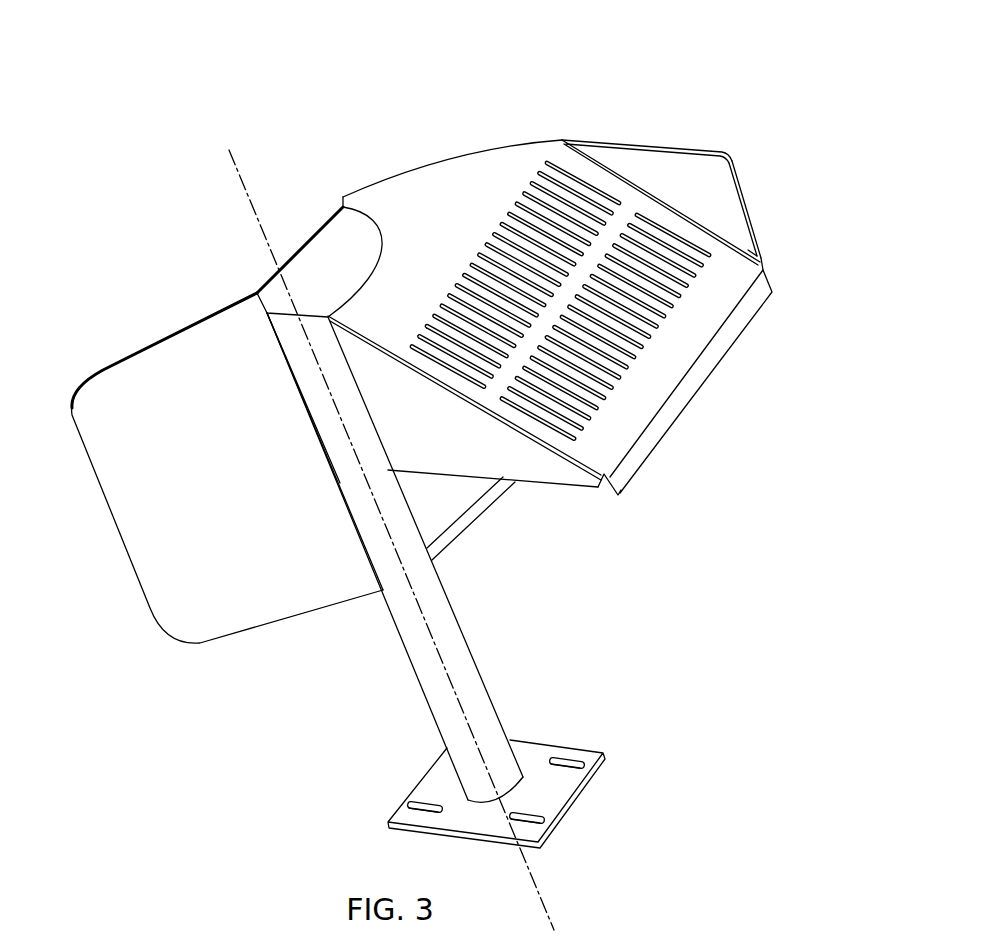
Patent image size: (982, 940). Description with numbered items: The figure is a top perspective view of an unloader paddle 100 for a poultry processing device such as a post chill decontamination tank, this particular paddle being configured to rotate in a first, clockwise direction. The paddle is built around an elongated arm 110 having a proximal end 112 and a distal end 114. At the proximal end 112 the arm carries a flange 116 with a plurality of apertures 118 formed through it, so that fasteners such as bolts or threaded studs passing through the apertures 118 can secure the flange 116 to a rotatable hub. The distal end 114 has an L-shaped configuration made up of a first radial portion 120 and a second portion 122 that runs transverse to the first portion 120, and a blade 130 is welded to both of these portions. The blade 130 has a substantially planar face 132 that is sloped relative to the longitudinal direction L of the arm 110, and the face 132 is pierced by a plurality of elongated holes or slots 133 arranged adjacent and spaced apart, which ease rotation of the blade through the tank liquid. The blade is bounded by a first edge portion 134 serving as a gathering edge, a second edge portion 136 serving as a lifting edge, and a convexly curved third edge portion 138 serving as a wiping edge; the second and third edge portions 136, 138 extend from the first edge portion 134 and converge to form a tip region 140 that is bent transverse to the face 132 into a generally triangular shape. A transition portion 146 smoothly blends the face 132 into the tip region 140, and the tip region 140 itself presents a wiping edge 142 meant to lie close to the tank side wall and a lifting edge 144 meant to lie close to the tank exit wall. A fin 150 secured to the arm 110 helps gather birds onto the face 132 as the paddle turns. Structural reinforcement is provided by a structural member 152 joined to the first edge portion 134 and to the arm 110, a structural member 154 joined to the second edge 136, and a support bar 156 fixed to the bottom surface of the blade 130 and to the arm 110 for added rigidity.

The unloader paddle 100 is at (500, 82).
The elongated arm 110 is at (470, 637).
The proximal end 112 is at (487, 708).
The distal end 114 is at (283, 338).
The flange 116 is at (557, 798).
The apertures 118 is at (413, 808).
The first radial portion 120 is at (320, 258).
The second portion 122 is at (303, 372).
The blade 130 is at (392, 165).
The face 132 is at (483, 163).
The holes or slots 133 is at (524, 194).
The first edge portion 134 is at (447, 397).
The second edge portion 136 is at (673, 399).
The third edge portion 138 is at (447, 158).
The tip region 140 is at (667, 140).
The wiping edge 142 is at (616, 141).
The lifting edge 144 is at (745, 188).
The transition portion 146 is at (756, 256).
The fin 150 is at (181, 638).
The structural member 152 is at (537, 470).
The structural member 154 is at (637, 469).
The support bar 156 is at (452, 541).
The longitudinal direction L is at (240, 182).